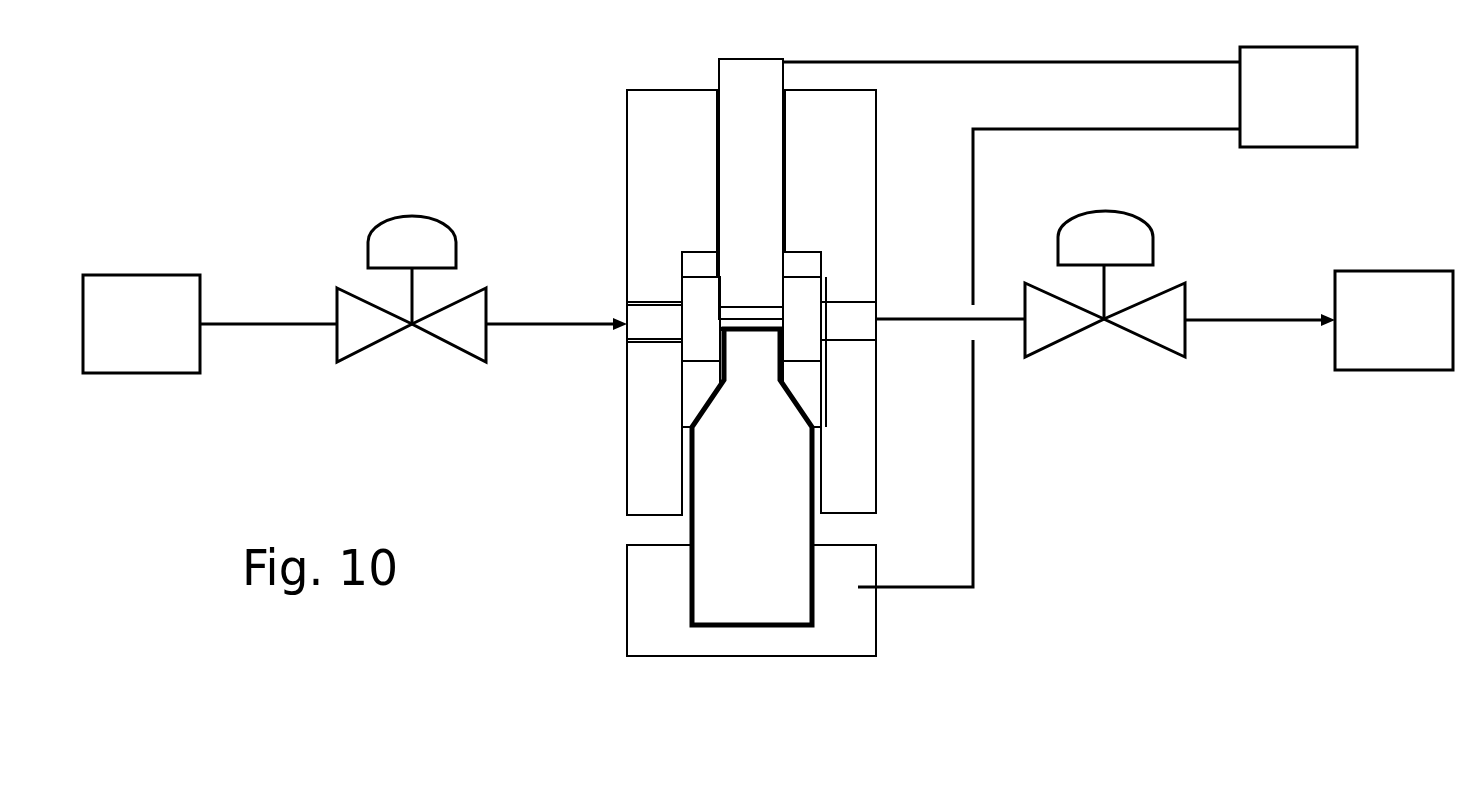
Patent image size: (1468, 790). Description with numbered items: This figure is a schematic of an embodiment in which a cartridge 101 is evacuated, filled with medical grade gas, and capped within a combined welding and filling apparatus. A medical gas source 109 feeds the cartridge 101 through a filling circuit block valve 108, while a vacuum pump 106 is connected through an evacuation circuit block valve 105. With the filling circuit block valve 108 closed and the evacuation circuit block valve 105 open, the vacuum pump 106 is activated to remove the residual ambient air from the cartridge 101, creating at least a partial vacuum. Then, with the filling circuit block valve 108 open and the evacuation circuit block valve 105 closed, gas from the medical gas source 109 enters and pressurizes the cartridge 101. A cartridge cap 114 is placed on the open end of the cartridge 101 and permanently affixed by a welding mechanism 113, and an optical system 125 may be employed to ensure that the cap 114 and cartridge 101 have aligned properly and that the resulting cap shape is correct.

The cartridge 101 is at (752, 477).
The evacuation circuit block valve 105 is at (1105, 302).
The vacuum pump 106 is at (1319, 320).
The filling circuit block valve 108 is at (411, 307).
The medical gas source 109 is at (210, 324).
The welding mechanism 113 is at (1070, 317).
The cartridge cap 114 is at (757, 290).
The optical system 125 is at (556, 365).